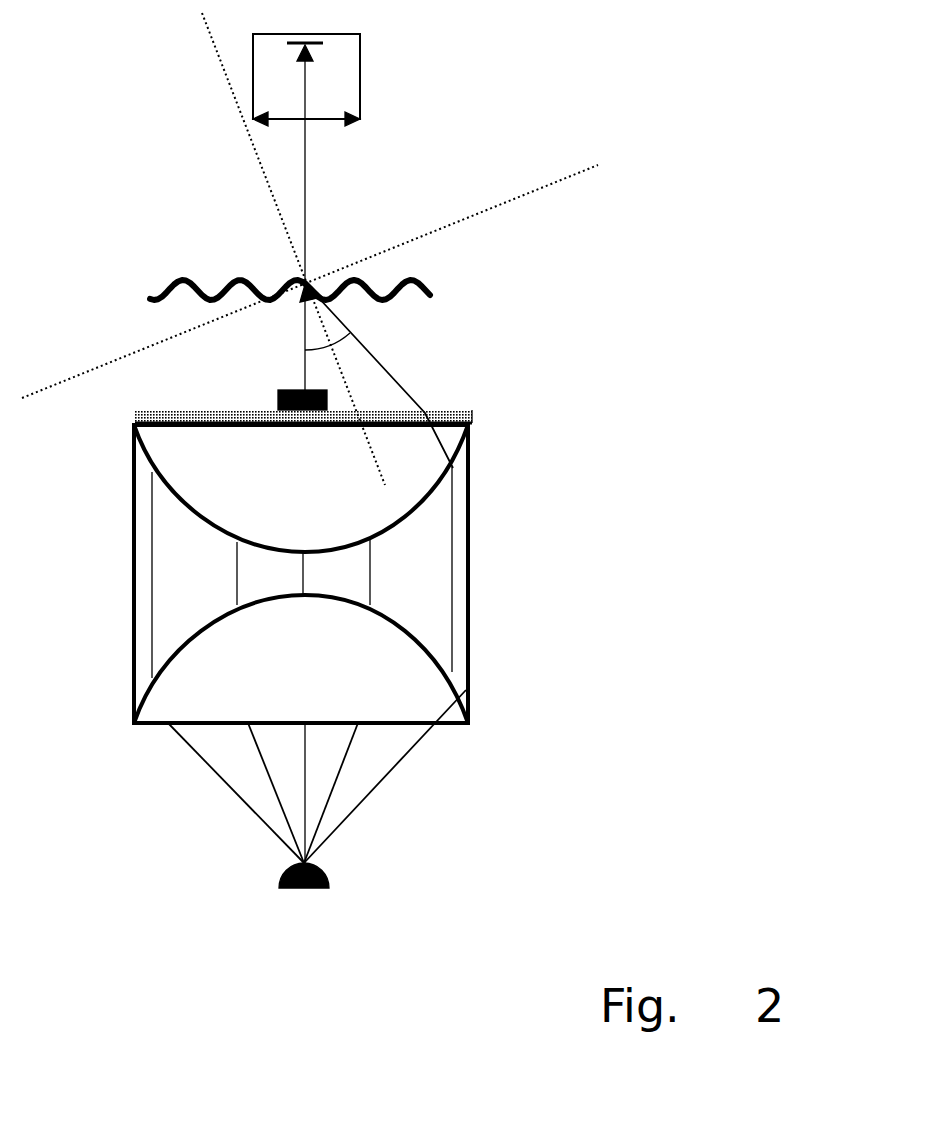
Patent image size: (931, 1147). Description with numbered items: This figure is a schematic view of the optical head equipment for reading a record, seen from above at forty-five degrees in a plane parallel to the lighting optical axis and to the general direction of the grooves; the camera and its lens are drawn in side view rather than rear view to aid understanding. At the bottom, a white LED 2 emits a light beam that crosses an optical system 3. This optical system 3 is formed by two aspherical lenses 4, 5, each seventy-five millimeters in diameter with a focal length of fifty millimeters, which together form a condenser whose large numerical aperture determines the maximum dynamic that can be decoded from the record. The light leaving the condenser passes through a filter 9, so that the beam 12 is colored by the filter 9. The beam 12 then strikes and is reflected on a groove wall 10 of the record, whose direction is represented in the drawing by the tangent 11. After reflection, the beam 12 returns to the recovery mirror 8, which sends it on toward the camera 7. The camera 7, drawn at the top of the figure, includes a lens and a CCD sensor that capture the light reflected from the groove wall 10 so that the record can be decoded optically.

The white LED 2 is at (317, 789).
The optical system 3 is at (347, 574).
The aspherical lens 4 is at (342, 659).
The aspherical lens 5 is at (339, 540).
The camera 7 is at (364, 65).
The recovery mirror 8 is at (347, 377).
The filter 9 is at (334, 389).
The groove wall 10 is at (334, 264).
The tangent 11 is at (327, 265).
The beam 12 is at (487, 342).